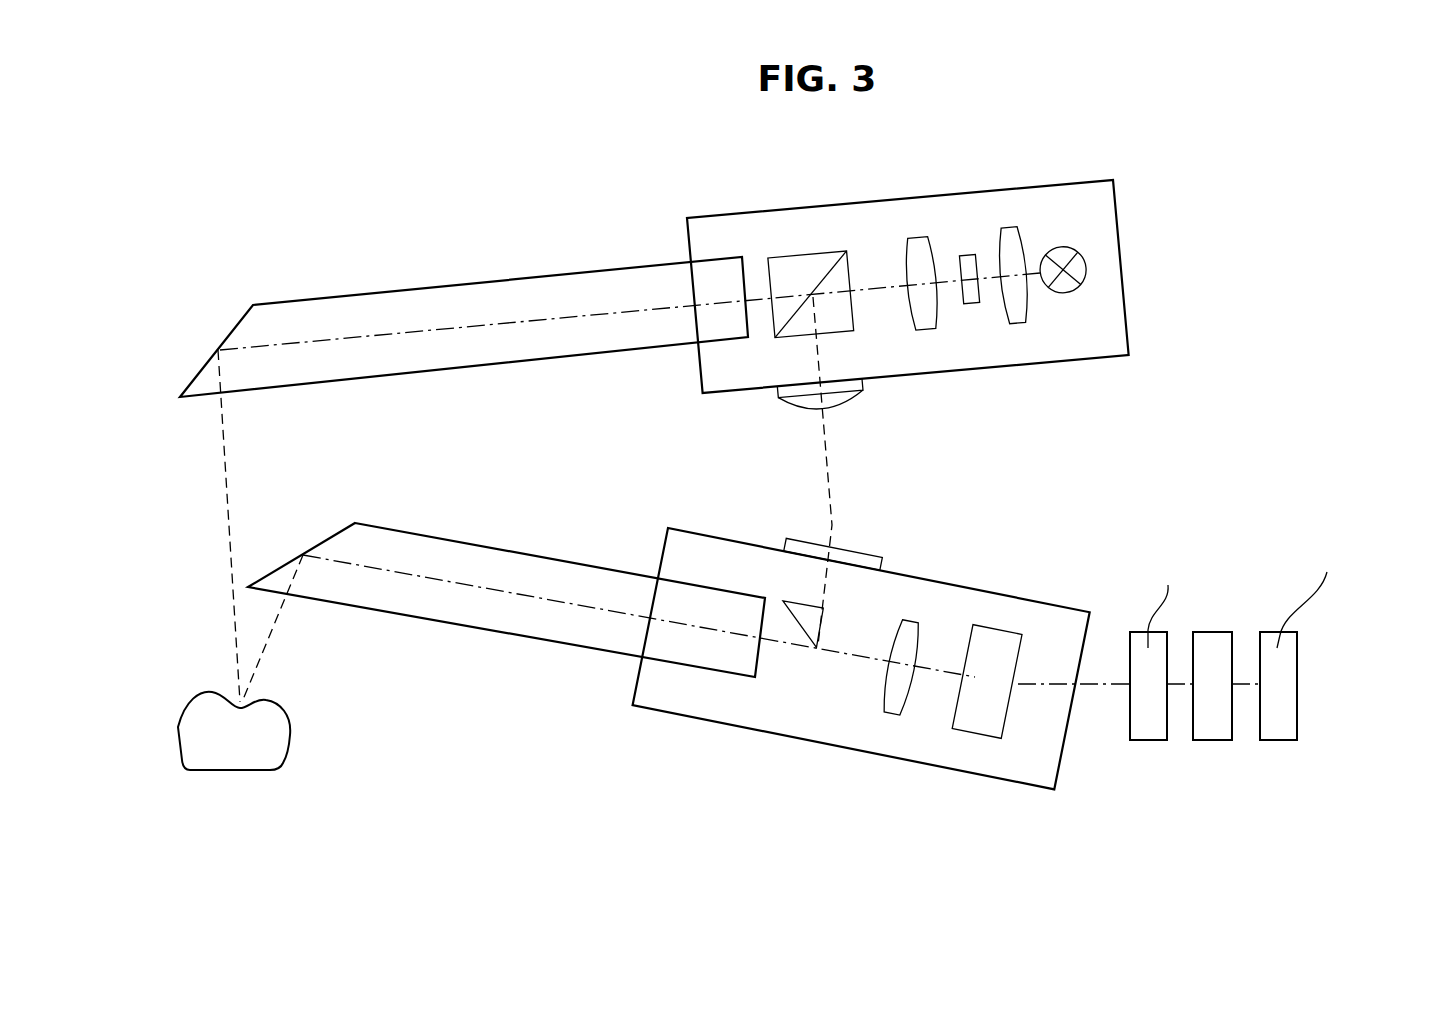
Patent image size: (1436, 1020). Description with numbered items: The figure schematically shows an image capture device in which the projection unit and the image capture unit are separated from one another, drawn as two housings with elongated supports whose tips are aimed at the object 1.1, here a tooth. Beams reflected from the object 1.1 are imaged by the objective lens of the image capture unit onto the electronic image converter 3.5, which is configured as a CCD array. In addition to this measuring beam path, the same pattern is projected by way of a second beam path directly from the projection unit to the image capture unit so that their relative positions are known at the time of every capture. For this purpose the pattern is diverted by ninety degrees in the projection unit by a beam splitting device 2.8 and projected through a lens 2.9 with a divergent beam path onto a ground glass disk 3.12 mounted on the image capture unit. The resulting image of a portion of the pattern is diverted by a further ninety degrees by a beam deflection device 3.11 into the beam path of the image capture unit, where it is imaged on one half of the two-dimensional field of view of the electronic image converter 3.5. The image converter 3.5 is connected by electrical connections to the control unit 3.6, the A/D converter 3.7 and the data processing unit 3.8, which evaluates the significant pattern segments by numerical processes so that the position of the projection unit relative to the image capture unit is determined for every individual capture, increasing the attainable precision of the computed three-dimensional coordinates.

The object 1.1 is at (272, 757).
The beam splitting device 2.8 is at (793, 277).
The lens 2.9 is at (863, 383).
The electronic image converter 3.5 is at (978, 737).
The control unit 3.6 is at (1150, 730).
The A/D converter 3.7 is at (1215, 730).
The data processing unit 3.8 is at (1282, 730).
The beam deflection device 3.11 is at (810, 622).
The ground glass disk 3.12 is at (853, 555).